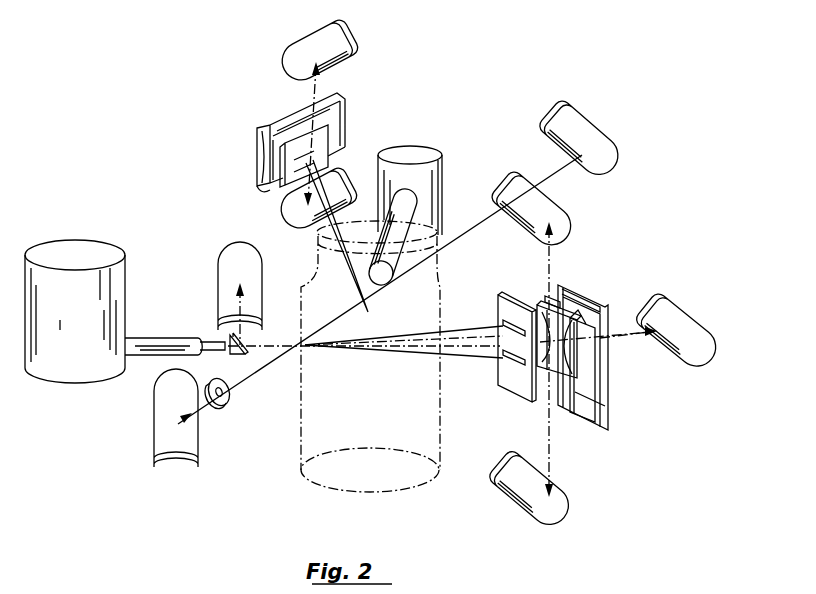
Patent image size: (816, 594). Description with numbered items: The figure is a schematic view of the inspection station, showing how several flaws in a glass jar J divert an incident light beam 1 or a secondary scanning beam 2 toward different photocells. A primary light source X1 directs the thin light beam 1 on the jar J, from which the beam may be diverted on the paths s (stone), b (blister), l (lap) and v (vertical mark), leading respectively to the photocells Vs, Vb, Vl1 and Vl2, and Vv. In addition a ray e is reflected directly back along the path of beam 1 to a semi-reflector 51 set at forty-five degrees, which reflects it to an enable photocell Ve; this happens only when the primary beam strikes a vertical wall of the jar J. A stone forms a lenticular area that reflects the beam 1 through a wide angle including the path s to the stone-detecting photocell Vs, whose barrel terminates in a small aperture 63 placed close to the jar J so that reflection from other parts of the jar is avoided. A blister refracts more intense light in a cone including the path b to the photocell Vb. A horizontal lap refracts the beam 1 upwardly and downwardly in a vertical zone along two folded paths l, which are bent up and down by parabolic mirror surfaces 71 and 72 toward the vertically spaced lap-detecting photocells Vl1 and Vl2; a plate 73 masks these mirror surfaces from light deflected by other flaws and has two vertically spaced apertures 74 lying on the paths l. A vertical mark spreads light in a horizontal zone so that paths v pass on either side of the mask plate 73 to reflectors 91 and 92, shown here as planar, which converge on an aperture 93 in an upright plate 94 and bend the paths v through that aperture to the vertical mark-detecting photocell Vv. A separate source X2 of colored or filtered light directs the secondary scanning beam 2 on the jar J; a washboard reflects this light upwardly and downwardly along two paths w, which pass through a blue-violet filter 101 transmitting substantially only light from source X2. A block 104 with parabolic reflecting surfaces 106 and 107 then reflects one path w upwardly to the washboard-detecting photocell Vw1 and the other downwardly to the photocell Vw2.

The primary light source X1 is at (78, 246).
The secondary light source X2 is at (415, 150).
The semi-reflector 51 is at (241, 362).
The aperture 63 is at (225, 407).
The enable photocell Ve is at (220, 260).
The stone-detecting photocell Vs is at (154, 433).
The washboard-detecting photocell Vw1 is at (296, 40).
The washboard-detecting photocell Vw2 is at (276, 214).
The blister-detecting photocell Vb is at (600, 133).
The lap-detecting photocell Vl1 is at (580, 226).
The lap-detecting photocell Vl2 is at (576, 510).
The vertical mark-detecting photocell Vv is at (692, 328).
The block 104 is at (256, 152).
The parabolic reflecting surface 106 is at (273, 142).
The parabolic reflecting surface 107 is at (262, 190).
The blue-violet filter 101 is at (342, 126).
The secondary scanning beam 2 is at (372, 305).
The glass jar J is at (314, 490).
The incident light beam 1 is at (298, 344).
The plate 73 is at (506, 292).
The apertures 74 is at (508, 360).
The parabolic mirror surface 71 is at (560, 310).
The parabolic mirror surface 72 is at (548, 372).
The reflector 92 is at (552, 298).
The reflector 91 is at (610, 394).
The aperture 93 is at (604, 300).
The upright plate 94 is at (596, 300).
The washboard light paths w is at (328, 78).
The enable ray e is at (250, 303).
The stone light path s is at (268, 358).
The lap light paths l is at (452, 336).
The vertical mark light paths v is at (472, 348).
The blister light path b is at (492, 240).